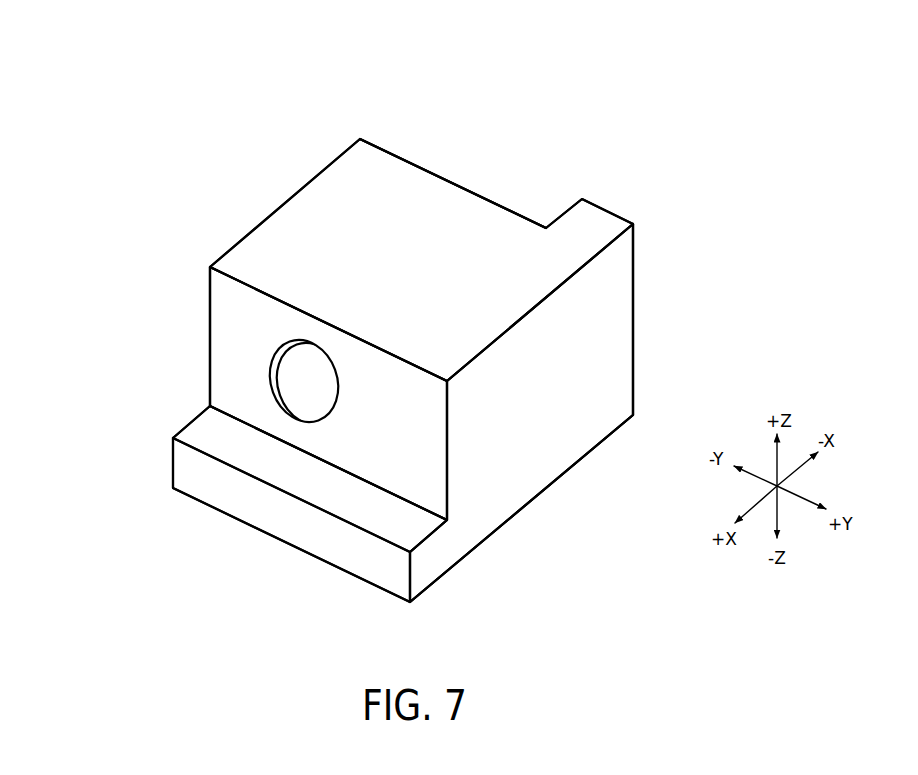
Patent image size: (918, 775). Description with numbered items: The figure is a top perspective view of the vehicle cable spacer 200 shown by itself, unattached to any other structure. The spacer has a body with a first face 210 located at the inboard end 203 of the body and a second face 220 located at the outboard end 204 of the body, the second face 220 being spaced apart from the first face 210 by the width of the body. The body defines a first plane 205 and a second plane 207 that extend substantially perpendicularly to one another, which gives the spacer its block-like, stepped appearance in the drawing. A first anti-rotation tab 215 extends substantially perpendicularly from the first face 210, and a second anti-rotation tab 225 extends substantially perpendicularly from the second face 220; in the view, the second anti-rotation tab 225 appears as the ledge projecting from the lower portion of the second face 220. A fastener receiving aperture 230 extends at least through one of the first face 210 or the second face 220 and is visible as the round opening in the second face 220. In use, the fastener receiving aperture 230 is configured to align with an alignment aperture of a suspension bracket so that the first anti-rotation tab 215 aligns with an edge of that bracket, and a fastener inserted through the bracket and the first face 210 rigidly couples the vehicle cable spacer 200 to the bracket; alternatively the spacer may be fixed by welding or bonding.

The vehicle cable spacer 200 is at (567, 130).
The inboard end 203 is at (495, 205).
The outboard end 204 is at (140, 378).
The first plane 205 is at (610, 367).
The second plane 207 is at (468, 555).
The first face 210 is at (445, 177).
The first anti-rotation tab 215 is at (633, 295).
The second face 220 is at (210, 349).
The second anti-rotation tab 225 is at (253, 515).
The fastener receiving aperture 230 is at (340, 382).